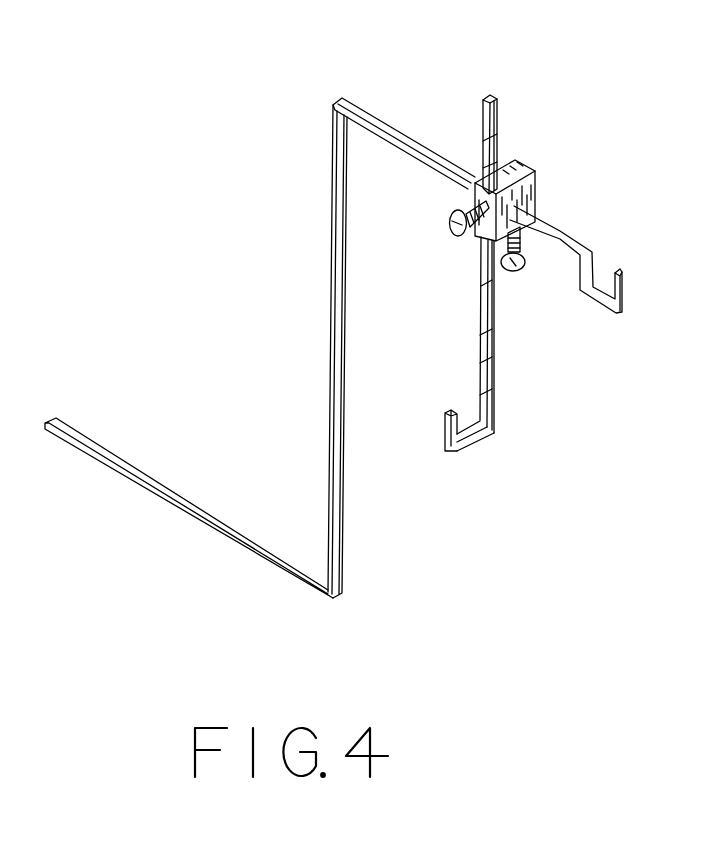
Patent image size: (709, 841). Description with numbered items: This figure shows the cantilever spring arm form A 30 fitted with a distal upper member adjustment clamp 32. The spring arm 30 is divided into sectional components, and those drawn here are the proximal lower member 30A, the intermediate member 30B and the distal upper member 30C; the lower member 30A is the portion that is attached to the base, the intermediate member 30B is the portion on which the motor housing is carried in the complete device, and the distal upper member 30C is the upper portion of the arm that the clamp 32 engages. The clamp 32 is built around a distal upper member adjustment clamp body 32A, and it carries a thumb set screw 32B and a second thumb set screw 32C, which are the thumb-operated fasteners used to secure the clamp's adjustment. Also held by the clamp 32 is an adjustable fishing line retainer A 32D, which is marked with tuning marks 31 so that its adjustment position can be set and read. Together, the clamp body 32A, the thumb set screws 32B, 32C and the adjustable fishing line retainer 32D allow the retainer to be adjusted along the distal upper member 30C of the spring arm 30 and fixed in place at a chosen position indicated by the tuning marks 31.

The cantilever spring arm form A 30 is at (375, 308).
The proximal lower member 30A is at (130, 468).
The intermediate member 30B is at (340, 454).
The distal upper member 30C is at (377, 124).
The tuning marks 31 is at (488, 364).
The distal upper member adjustment clamp 32 is at (541, 175).
The distal upper member adjustment clamp body 32A is at (515, 167).
The thumb set screw 32B is at (517, 270).
The thumb set screw 32C is at (449, 222).
The adjustable fishing line retainer A 32D is at (487, 418).